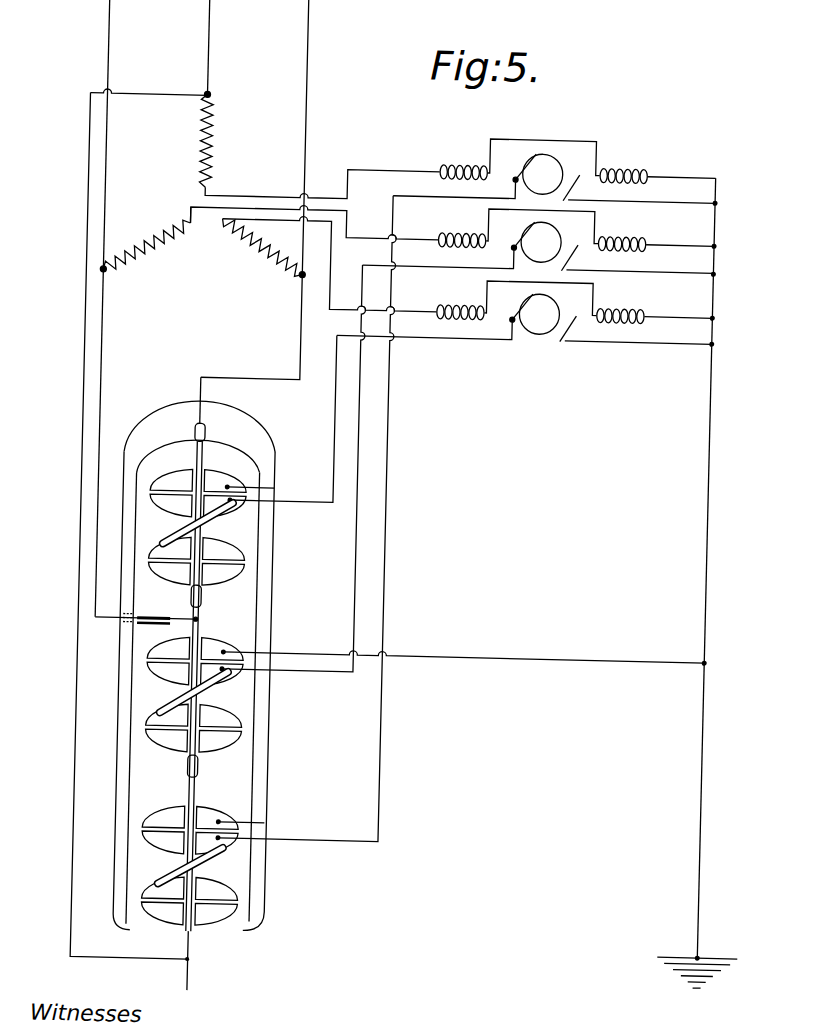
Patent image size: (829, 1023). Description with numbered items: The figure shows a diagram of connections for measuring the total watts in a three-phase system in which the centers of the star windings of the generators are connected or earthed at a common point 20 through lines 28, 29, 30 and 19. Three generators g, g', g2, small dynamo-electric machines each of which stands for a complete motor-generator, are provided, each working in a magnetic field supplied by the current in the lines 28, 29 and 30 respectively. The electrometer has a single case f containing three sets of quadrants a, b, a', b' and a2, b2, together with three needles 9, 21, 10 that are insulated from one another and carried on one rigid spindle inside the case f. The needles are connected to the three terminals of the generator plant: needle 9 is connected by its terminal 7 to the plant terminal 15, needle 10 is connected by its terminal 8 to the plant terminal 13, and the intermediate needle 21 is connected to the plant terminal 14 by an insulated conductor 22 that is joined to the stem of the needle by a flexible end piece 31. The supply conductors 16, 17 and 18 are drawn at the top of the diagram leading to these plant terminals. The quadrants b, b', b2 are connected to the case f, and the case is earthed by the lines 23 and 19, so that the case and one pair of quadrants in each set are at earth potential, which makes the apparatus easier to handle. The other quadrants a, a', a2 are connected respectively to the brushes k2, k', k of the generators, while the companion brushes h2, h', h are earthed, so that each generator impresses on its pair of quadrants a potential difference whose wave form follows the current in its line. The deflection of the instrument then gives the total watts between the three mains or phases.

The terminal 7 is at (188, 393).
The terminal 8 is at (199, 978).
The needle 9 is at (218, 516).
The needle 10 is at (216, 855).
The terminal 13 is at (202, 97).
The terminal 14 is at (144, 257).
The terminal 15 is at (264, 261).
The supply conductor 16 is at (198, 15).
The supply conductor 17 is at (98, 9).
The supply conductor 18 is at (297, 30).
The line 19 is at (708, 492).
The common point 20 is at (722, 966).
The intermediate needle 21 is at (221, 690).
The insulated conductor 22 is at (145, 608).
The line 23 is at (532, 650).
The line 28 is at (378, 170).
The line 29 is at (352, 239).
The line 30 is at (340, 311).
The flexible end piece 31 is at (186, 623).
The quadrants a is at (221, 493).
The quadrants b is at (197, 517).
The quadrants a' is at (217, 667).
The quadrants b' is at (192, 687).
The quadrants a2 is at (176, 820).
The quadrants b2 is at (217, 816).
The case f is at (182, 666).
The generator g is at (542, 174).
The generator g' is at (541, 242).
The generator g2 is at (539, 314).
The brush h is at (576, 188).
The brush h' is at (577, 258).
The brush h2 is at (578, 330).
The brush k is at (518, 167).
The brush k' is at (516, 235).
The brush k2 is at (514, 307).